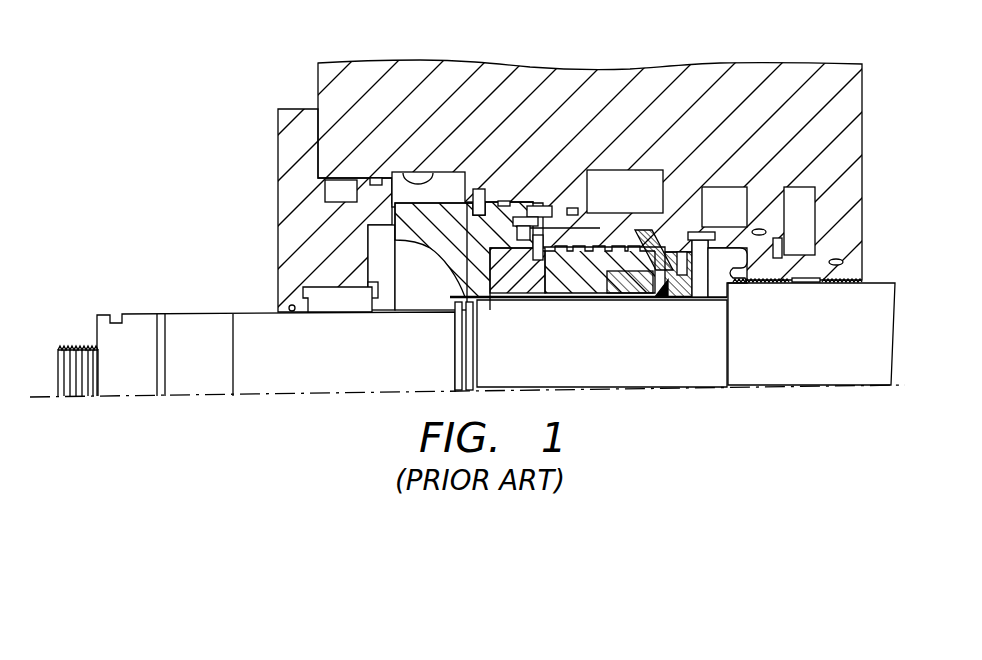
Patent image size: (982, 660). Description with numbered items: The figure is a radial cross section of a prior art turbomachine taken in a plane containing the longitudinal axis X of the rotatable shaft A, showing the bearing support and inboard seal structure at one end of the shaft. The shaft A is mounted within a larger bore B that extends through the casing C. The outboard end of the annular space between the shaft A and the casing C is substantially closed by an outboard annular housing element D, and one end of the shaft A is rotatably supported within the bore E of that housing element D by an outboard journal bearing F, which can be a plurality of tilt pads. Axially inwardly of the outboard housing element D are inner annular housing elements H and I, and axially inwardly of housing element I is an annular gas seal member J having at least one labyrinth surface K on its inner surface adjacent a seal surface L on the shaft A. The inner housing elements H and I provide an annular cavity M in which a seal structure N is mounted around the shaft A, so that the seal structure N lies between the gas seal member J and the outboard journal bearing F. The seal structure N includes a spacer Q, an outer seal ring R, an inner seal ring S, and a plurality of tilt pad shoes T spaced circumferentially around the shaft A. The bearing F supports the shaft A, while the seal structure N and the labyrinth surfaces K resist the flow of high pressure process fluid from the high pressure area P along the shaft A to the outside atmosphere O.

The rotatable shaft A is at (428, 360).
The bore B is at (425, 174).
The casing C is at (760, 66).
The outboard annular housing element D is at (279, 203).
The bore E is at (292, 313).
The outboard journal bearing F is at (348, 314).
The inner annular housing element H is at (437, 262).
The inner annular housing element I is at (622, 213).
The annular gas seal member J is at (762, 283).
The labyrinth surface K is at (785, 284).
The seal surface L is at (877, 280).
The annular cavity M is at (582, 299).
The seal structure N is at (679, 364).
The outside atmosphere O is at (198, 270).
The high pressure area P is at (904, 208).
The spacer Q is at (500, 300).
The outer seal ring R is at (557, 298).
The inner seal ring S is at (663, 299).
The tilt pad shoes T is at (618, 299).
The longitudinal axis X is at (55, 398).